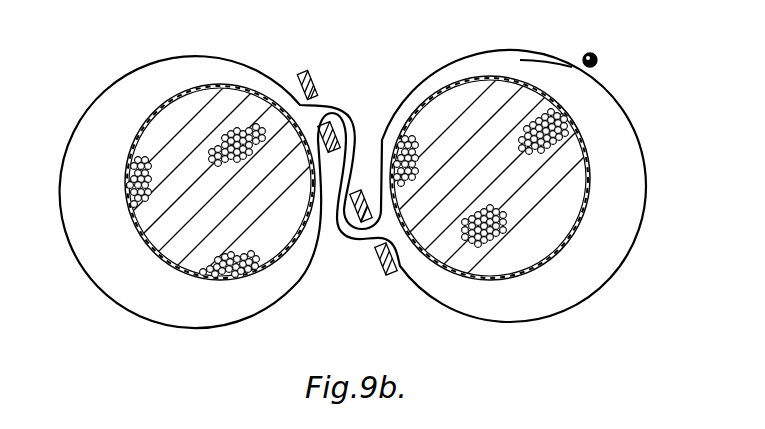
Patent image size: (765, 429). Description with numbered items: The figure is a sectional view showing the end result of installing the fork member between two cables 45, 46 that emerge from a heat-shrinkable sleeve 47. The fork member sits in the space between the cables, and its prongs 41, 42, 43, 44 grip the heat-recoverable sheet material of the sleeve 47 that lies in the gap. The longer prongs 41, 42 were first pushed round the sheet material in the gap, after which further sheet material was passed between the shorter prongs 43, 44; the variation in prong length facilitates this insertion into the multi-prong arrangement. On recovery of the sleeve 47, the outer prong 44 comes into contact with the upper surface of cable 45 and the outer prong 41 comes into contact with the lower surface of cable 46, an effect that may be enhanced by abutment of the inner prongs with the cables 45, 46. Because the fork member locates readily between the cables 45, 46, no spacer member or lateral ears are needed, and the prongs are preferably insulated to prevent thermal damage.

The longer prong 41 is at (381, 262).
The longer prong 42 is at (351, 231).
The shorter prong 43 is at (344, 130).
The shorter prong 44 is at (341, 81).
The cable 45 is at (270, 232).
The cable 46 is at (475, 253).
The heat-shrinkable sleeve 47 is at (623, 103).